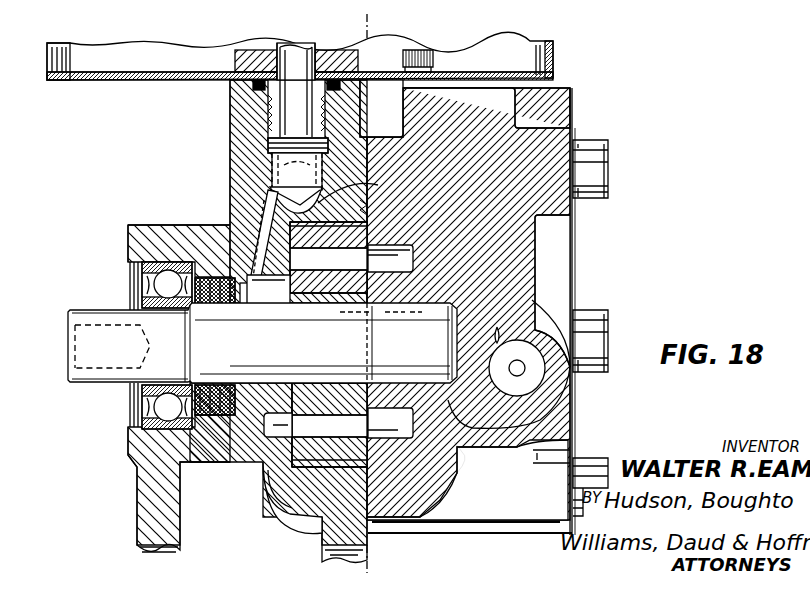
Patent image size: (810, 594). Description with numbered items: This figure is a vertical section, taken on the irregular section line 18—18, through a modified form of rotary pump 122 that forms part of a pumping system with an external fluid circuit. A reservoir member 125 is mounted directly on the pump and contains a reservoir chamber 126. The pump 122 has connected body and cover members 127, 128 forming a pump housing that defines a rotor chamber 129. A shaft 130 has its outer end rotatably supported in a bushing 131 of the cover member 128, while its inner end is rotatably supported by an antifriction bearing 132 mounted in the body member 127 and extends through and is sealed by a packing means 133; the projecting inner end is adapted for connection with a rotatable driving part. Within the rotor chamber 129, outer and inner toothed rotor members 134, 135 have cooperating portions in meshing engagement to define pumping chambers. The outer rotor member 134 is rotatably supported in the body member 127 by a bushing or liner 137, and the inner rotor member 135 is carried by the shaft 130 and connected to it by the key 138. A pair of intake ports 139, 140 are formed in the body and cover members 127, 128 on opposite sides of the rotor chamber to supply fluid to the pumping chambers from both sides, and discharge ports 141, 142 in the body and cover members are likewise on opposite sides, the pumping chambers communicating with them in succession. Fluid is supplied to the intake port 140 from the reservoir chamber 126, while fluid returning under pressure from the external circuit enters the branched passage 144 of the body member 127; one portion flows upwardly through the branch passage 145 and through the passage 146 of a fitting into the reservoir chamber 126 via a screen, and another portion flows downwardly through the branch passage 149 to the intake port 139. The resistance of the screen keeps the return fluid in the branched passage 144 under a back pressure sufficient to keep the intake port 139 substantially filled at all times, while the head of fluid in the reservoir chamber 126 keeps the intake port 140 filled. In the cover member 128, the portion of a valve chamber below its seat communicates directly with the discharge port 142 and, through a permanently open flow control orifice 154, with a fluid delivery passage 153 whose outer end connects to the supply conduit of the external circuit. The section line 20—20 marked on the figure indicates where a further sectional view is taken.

The section line 18 is at (544, 8).
The section line 20 is at (367, 14).
The rotary pump 122 is at (574, 268).
The reservoir member 125 is at (72, 83).
The reservoir chamber 126 is at (130, 67).
The body member 127 is at (240, 462).
The cover member 128 is at (450, 463).
The rotor chamber 129 is at (313, 470).
The shaft 130 is at (230, 452).
The bushing 131 is at (462, 454).
The antifriction bearing 132 is at (163, 268).
The packing means 133 is at (210, 272).
The outer toothed rotor member 134 is at (328, 257).
The inner toothed rotor member 135 is at (390, 259).
The bushing or liner 137 is at (371, 195).
The key 138 is at (350, 308).
The intake port 139 is at (290, 312).
The intake port 140 is at (372, 246).
The discharge port 141 is at (265, 480).
The discharge port 142 is at (397, 438).
The branched passage 144 is at (330, 198).
The branch passage 145 is at (268, 148).
The passage 146 is at (288, 45).
The branch passage 149 is at (265, 192).
The fluid delivery passage 153 is at (522, 378).
The flow control orifice 154 is at (525, 444).